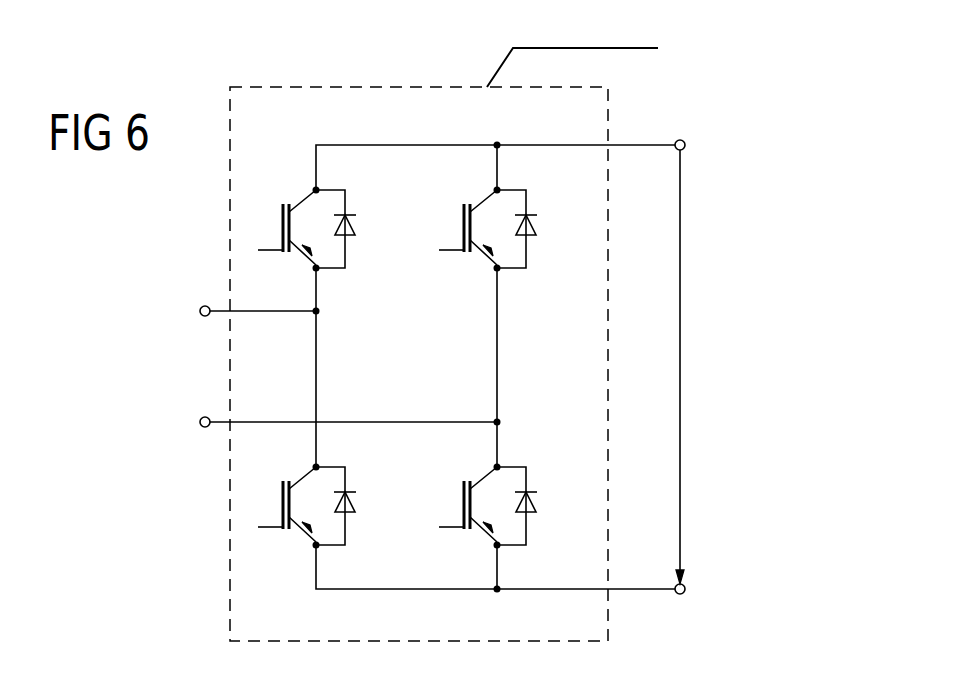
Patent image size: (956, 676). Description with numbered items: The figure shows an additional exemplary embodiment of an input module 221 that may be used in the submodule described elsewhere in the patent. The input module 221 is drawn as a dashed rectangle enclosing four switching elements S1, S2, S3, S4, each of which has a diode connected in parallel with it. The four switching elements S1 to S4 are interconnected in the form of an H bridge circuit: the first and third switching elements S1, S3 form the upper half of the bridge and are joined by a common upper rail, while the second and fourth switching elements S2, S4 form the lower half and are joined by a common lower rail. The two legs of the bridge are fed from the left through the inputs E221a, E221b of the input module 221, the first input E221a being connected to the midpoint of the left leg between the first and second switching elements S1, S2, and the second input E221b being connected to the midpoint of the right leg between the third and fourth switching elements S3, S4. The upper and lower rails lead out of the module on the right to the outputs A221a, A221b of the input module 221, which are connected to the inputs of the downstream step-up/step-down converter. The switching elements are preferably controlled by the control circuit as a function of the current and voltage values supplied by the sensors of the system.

The input module 221 is at (443, 86).
The switching element S1 is at (302, 229).
The switching element S2 is at (301, 506).
The switching element S3 is at (482, 229).
The switching element S4 is at (482, 506).
The input of the input module E221a is at (200, 311).
The input of the input module E221b is at (200, 422).
The output of the input module A221a is at (686, 145).
The output of the input module A221b is at (686, 589).